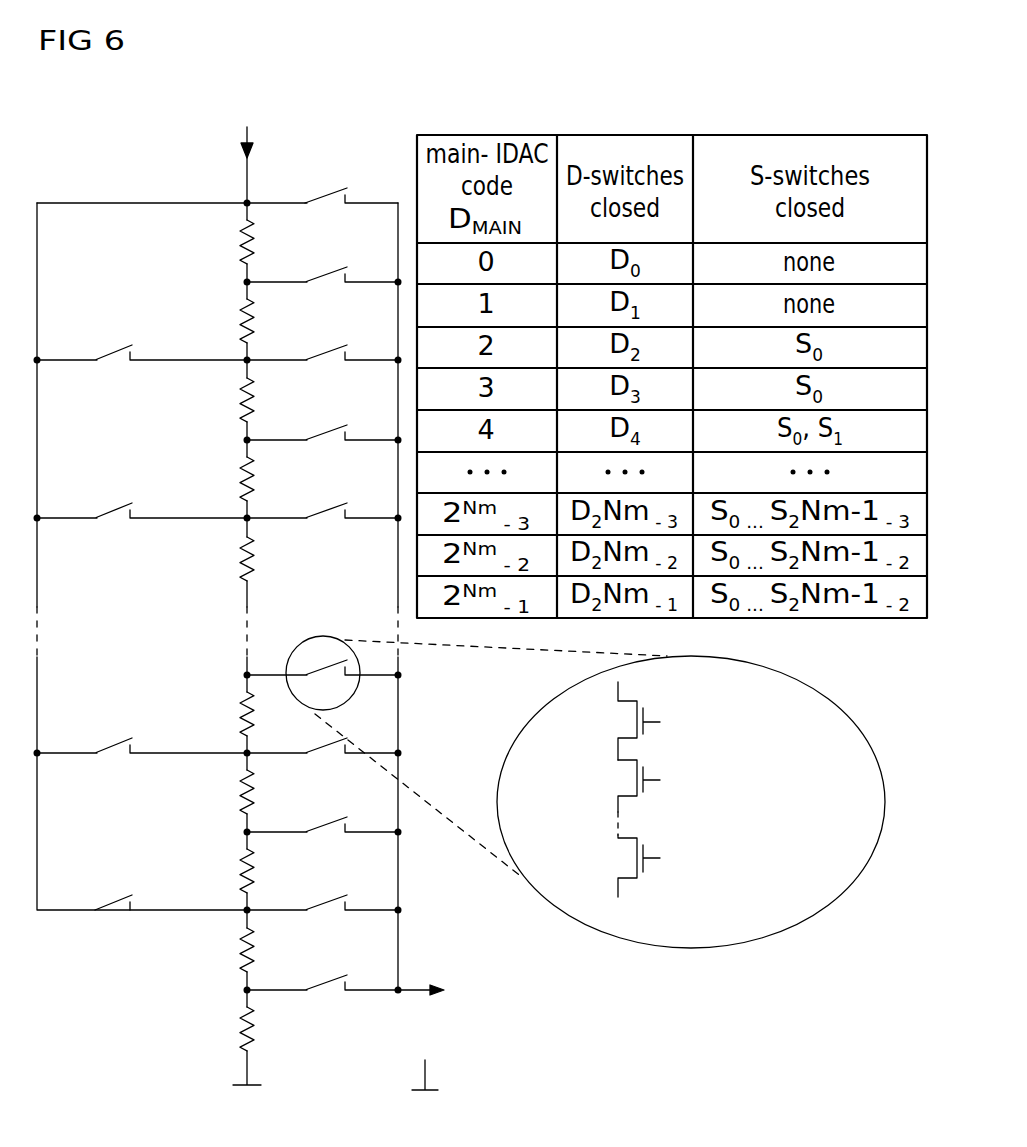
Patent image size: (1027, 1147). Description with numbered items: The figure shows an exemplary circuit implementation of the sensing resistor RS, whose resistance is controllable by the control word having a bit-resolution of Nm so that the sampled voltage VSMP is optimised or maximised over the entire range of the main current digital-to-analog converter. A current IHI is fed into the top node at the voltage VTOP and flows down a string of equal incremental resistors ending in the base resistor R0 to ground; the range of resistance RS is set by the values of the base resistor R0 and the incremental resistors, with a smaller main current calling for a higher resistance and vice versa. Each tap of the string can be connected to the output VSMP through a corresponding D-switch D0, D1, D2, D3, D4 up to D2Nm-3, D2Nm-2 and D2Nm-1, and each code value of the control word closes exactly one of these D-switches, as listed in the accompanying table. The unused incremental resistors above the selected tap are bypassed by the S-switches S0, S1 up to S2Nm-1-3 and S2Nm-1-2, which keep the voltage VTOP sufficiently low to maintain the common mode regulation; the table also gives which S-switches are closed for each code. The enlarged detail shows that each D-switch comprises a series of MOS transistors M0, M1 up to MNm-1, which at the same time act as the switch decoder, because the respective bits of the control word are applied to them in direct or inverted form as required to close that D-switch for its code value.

The sensing resistor RS is at (137, 155).
The current IHI is at (245, 149).
The top voltage VTOP is at (172, 190).
The D-switch D0 is at (328, 177).
The D-switch D1 is at (322, 248).
The D-switch D2 is at (322, 334).
The D-switch D3 is at (322, 412).
The D-switch D4 is at (322, 491).
The D-switch D2Nm-3 is at (322, 806).
The D-switch D2Nm-2 is at (322, 884).
The D-switch D2Nm-1 is at (322, 963).
The S-switch S0 is at (142, 333).
The S-switch S1 is at (142, 491).
The S-switch S2Nm-1-3 is at (142, 724).
The S-switch S2Nm-1-2 is at (112, 880).
The resistance value R0 is at (228, 1029).
The sampled voltage VSMP is at (438, 1037).
The MOS transistor M0 is at (692, 721).
The MOS transistor M1 is at (694, 786).
The MOS transistor MNm-1 is at (694, 866).